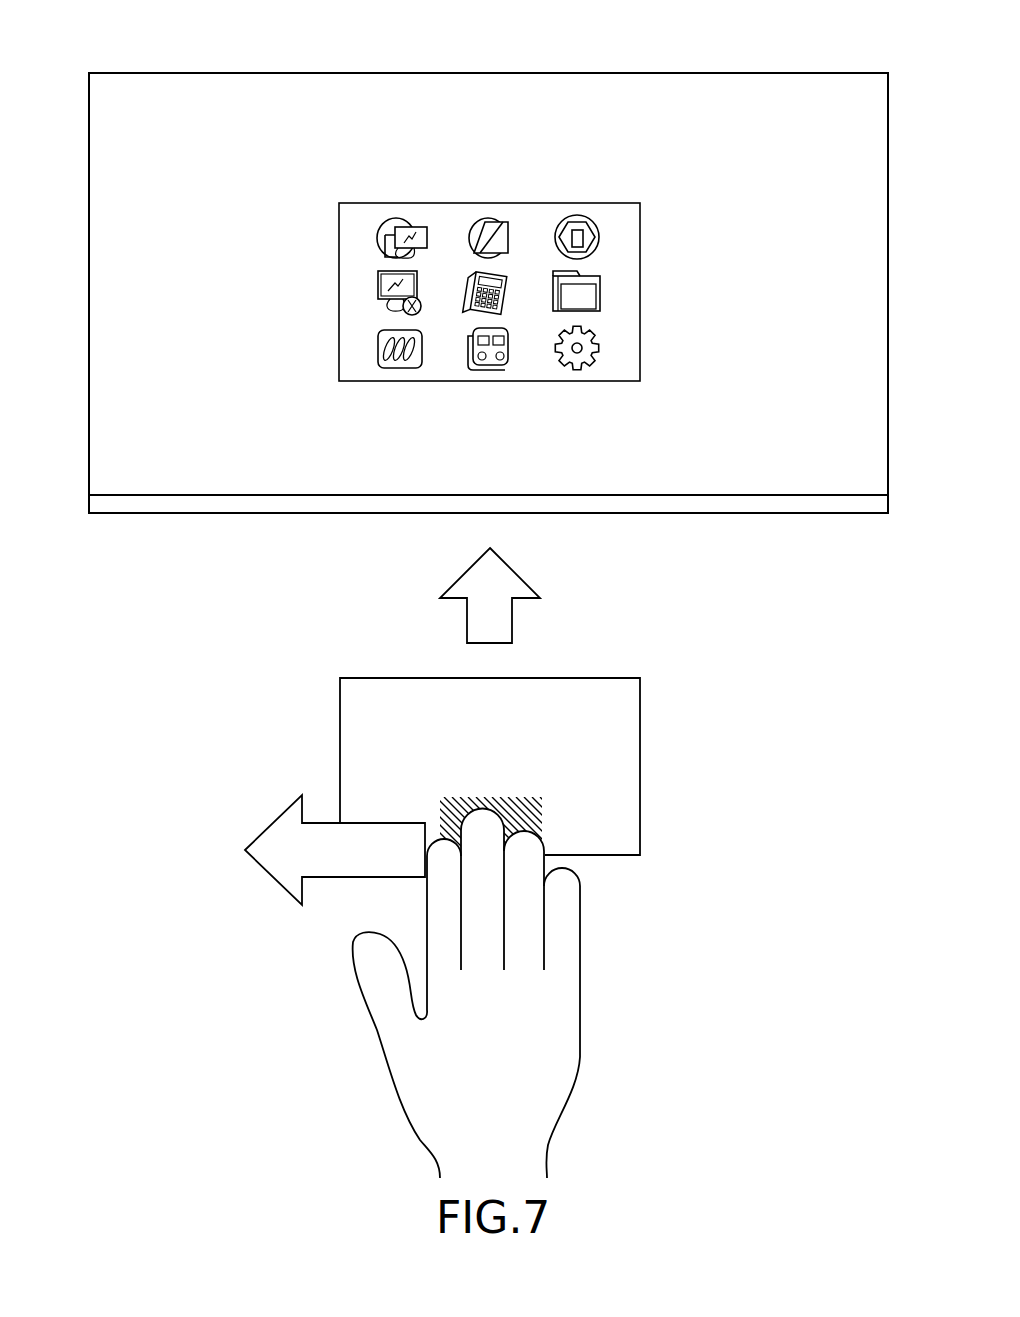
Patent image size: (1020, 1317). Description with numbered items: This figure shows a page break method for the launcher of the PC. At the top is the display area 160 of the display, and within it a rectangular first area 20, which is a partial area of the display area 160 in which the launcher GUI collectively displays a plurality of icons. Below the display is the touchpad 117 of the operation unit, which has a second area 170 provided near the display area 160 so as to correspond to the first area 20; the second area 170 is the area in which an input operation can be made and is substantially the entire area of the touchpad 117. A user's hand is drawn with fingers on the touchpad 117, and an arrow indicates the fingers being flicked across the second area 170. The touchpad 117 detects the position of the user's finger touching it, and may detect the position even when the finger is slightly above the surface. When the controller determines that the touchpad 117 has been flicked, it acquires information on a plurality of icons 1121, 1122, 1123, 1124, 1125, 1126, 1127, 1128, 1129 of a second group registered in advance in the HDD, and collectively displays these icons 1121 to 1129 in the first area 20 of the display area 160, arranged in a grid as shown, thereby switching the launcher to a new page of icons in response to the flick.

The first area 20 is at (360, 203).
The display area 160 is at (773, 72).
The icon 1121 is at (402, 215).
The icon 1122 is at (493, 215).
The icon 1123 is at (579, 215).
The icon 1124 is at (417, 296).
The icon 1125 is at (508, 295).
The icon 1126 is at (601, 296).
The icon 1127 is at (375, 358).
The icon 1128 is at (468, 357).
The icon 1129 is at (597, 361).
The touchpad 117 is at (595, 678).
The second area 170 is at (628, 828).